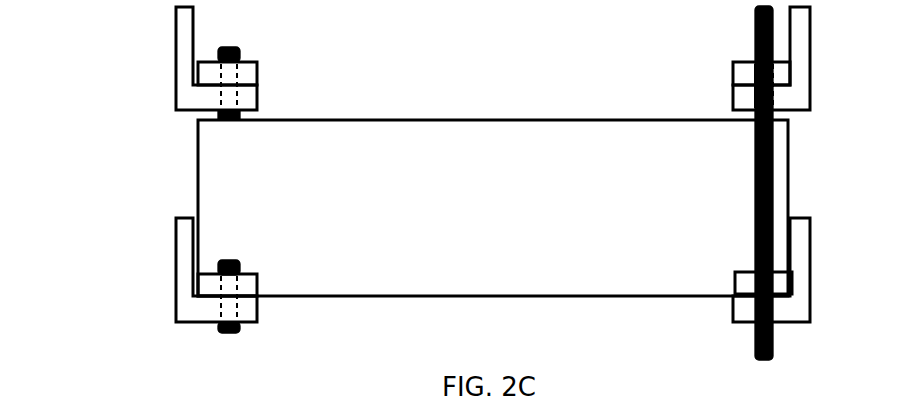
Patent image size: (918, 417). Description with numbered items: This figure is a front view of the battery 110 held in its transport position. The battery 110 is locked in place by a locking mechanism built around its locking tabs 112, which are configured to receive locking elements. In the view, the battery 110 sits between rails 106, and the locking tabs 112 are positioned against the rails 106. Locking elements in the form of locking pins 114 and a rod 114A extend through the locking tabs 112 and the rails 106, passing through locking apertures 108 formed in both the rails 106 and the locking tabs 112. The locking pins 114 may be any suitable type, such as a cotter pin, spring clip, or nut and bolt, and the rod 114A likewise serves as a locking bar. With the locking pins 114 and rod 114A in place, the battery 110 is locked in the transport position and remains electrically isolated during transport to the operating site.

The rail 106 is at (175, 62).
The locking aperture 108 is at (218, 306).
The battery 110 is at (518, 227).
The locking tab 112 is at (200, 287).
The locking pin 114 is at (219, 324).
The rod 114A is at (774, 170).